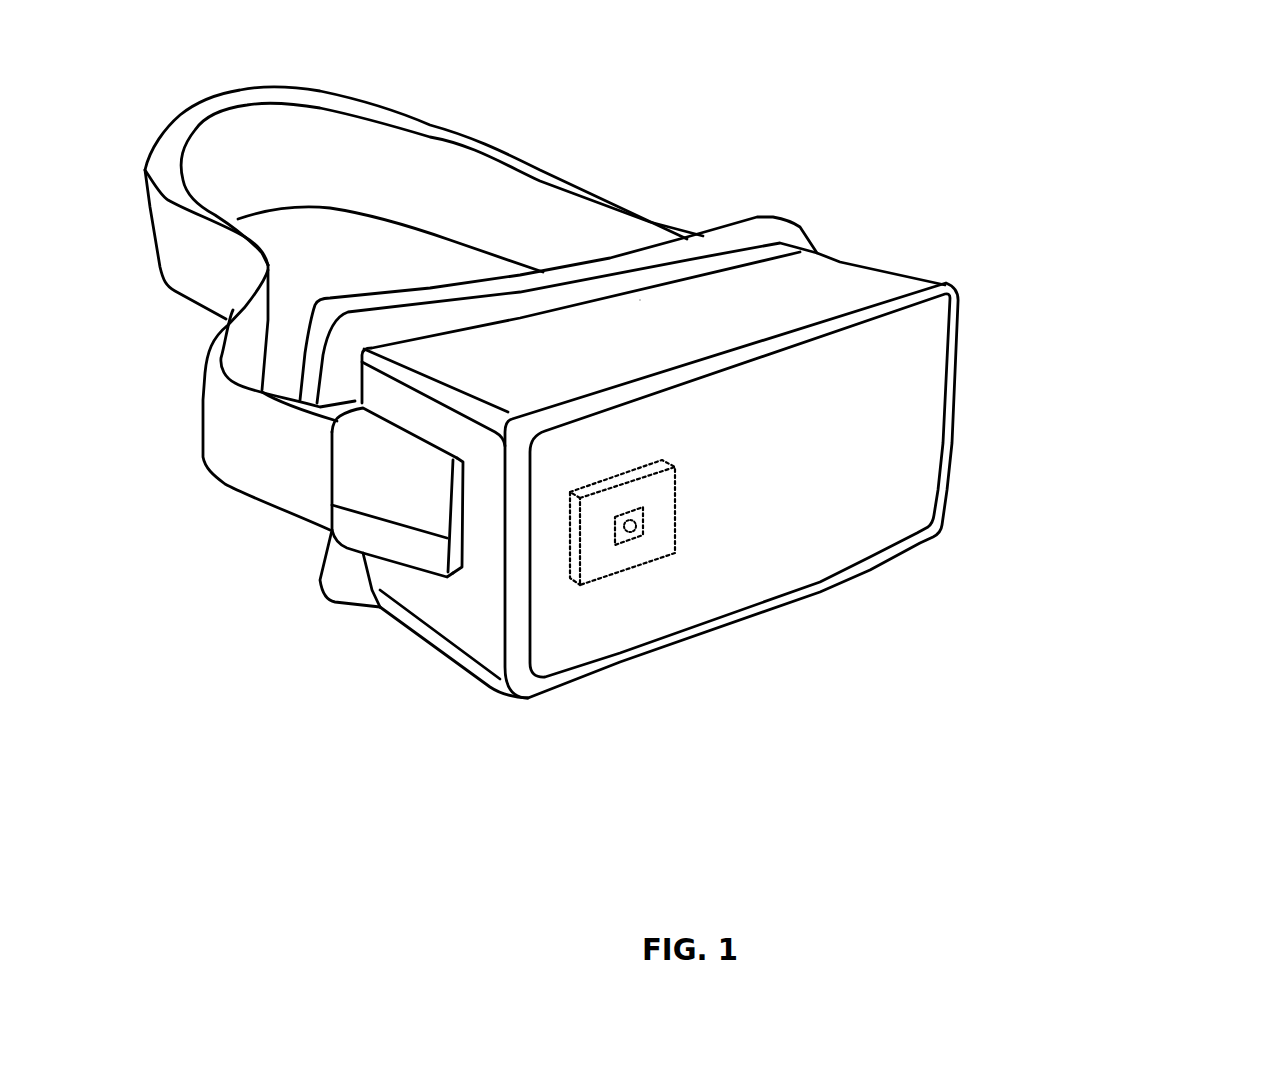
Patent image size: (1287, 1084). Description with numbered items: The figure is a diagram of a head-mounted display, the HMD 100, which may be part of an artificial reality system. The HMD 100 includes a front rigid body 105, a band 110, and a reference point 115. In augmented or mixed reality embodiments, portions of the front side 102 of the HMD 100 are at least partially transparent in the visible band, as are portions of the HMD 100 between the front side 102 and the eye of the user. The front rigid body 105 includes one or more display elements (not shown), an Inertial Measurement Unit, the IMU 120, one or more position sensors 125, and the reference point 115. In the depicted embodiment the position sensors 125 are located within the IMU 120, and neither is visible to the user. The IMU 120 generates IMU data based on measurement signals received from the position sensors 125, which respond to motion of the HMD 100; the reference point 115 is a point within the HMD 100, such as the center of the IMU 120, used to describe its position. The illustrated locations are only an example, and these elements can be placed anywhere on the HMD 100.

The head-mounted display (HMD) 100 is at (1258, 63).
The front side 102 is at (863, 437).
The front rigid body 105 is at (953, 287).
The band 110 is at (560, 178).
The reference point 115 is at (632, 533).
The Inertial Measurement Unit (IMU) 120 is at (677, 543).
The position sensors 125 is at (615, 547).